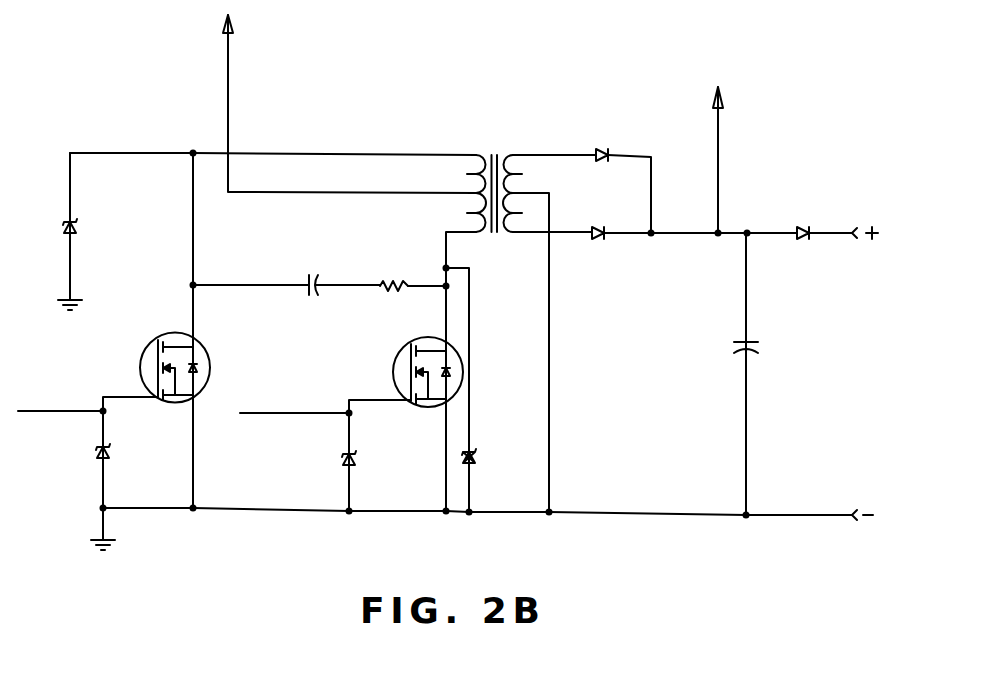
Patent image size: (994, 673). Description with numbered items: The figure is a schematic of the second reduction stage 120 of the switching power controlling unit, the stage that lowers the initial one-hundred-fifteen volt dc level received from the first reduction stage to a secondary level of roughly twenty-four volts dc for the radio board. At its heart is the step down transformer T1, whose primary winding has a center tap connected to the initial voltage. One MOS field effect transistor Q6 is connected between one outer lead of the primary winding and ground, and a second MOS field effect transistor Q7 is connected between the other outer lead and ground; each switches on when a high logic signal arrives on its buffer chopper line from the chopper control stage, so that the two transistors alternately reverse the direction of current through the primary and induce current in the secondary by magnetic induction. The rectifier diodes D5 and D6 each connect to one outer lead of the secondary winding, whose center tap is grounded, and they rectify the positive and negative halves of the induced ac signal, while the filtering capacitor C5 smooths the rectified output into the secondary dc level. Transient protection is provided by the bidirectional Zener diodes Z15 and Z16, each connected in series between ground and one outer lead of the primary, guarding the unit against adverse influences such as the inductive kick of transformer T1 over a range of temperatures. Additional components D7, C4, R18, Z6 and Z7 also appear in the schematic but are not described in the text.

The second reduction stage 120 is at (368, 105).
The step down transformer T1 is at (492, 148).
The rectifier diode D5 is at (602, 149).
The rectifier diode D6 is at (601, 240).
The diode D7 is at (803, 240).
The capacitor C4 is at (312, 272).
The resistor R18 is at (398, 280).
The bidirectional Zener diode Z15 is at (80, 227).
The MOS field effect transistor Q6 is at (160, 337).
The MOS field effect transistor Q7 is at (410, 343).
The zener diode Z6 is at (92, 452).
The zener diode Z7 is at (340, 460).
The bidirectional Zener diode Z16 is at (478, 460).
The filtering capacitor C5 is at (760, 347).